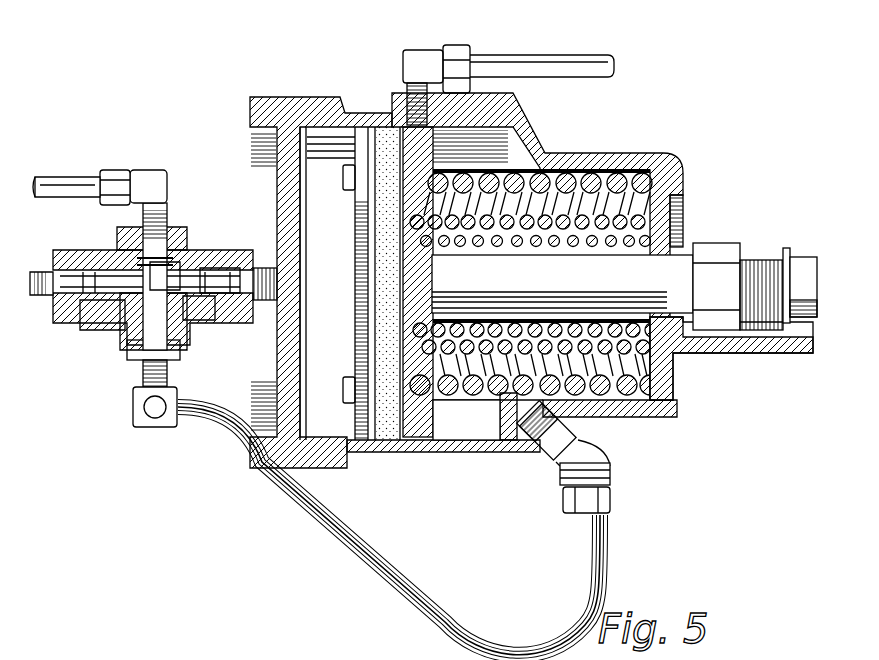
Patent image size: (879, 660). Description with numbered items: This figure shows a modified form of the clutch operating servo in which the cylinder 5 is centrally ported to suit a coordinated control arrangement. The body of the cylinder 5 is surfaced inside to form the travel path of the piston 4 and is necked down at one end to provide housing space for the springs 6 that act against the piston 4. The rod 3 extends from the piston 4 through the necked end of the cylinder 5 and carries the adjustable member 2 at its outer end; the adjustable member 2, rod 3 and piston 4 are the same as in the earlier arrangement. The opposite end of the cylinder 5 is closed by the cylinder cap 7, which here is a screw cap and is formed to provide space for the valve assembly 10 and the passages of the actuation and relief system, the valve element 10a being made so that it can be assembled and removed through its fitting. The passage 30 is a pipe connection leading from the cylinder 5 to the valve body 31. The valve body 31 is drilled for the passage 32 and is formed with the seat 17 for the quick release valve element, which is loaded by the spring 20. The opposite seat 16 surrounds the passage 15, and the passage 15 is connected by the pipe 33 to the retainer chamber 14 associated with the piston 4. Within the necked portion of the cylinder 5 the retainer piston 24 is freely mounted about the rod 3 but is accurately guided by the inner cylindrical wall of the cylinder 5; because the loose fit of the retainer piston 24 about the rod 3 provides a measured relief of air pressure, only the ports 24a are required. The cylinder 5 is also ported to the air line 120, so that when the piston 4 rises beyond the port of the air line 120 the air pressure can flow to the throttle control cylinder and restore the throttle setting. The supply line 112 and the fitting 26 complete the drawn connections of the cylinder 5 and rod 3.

The adjustable member 2 is at (807, 262).
The rod 3 is at (662, 262).
The piston 4 is at (364, 130).
The cylinder 5 is at (525, 131).
The springs 6 is at (572, 168).
The cylinder cap 7 is at (268, 196).
The valve assembly 10 is at (72, 250).
The valve element 10a is at (165, 228).
The retainer chamber 14 is at (448, 425).
The passage 15 is at (150, 318).
The seat 16 is at (188, 318).
The seat 17 is at (112, 272).
The spring 20 is at (118, 306).
The retainer piston 24 is at (678, 190).
The ports 24a is at (676, 352).
The nut 26 is at (783, 258).
The passage 30 is at (243, 304).
The valve body 31 is at (226, 262).
The passage 32 is at (168, 258).
The pipe 33 is at (205, 412).
The supply line 112 is at (70, 177).
The air line 120 is at (564, 62).